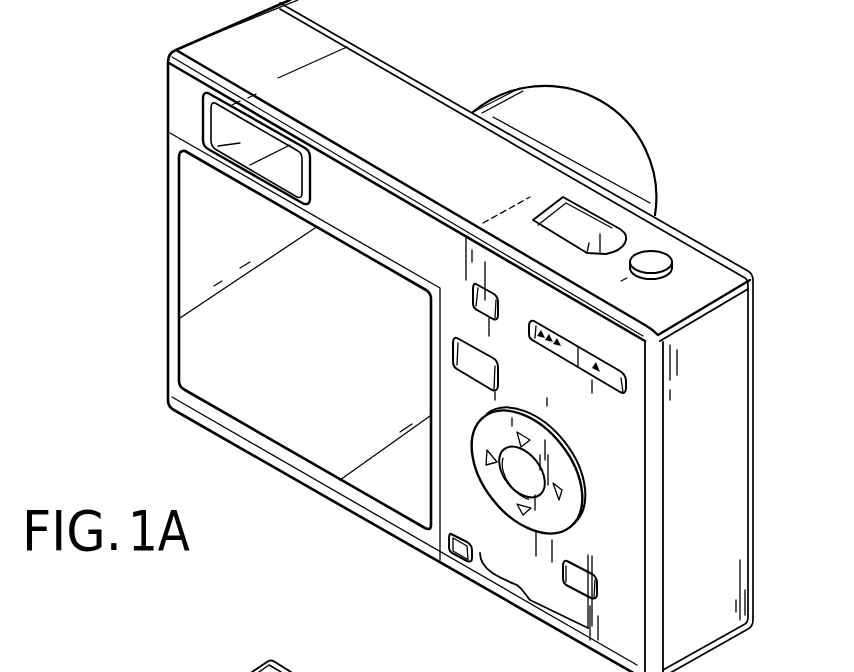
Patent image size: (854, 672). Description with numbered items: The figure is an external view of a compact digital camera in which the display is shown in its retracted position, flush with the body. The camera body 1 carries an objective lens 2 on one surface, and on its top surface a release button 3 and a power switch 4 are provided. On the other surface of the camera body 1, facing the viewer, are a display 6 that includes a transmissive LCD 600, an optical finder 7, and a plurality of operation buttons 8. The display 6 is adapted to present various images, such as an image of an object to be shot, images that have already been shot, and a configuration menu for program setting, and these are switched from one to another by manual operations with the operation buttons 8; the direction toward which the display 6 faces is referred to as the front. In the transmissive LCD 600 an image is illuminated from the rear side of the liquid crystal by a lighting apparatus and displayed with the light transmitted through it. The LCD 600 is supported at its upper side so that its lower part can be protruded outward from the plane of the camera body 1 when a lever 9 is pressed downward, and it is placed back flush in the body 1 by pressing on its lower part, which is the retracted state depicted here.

The camera body 1 is at (380, 101).
The objective lens 2 is at (562, 117).
The release button 3 is at (590, 218).
The power switch 4 is at (660, 258).
The display 6 is at (114, 291).
The optical finder 7 is at (237, 143).
The operation buttons 8 is at (527, 593).
The lever 9 is at (452, 548).
The transmissive LCD 600 is at (248, 395).